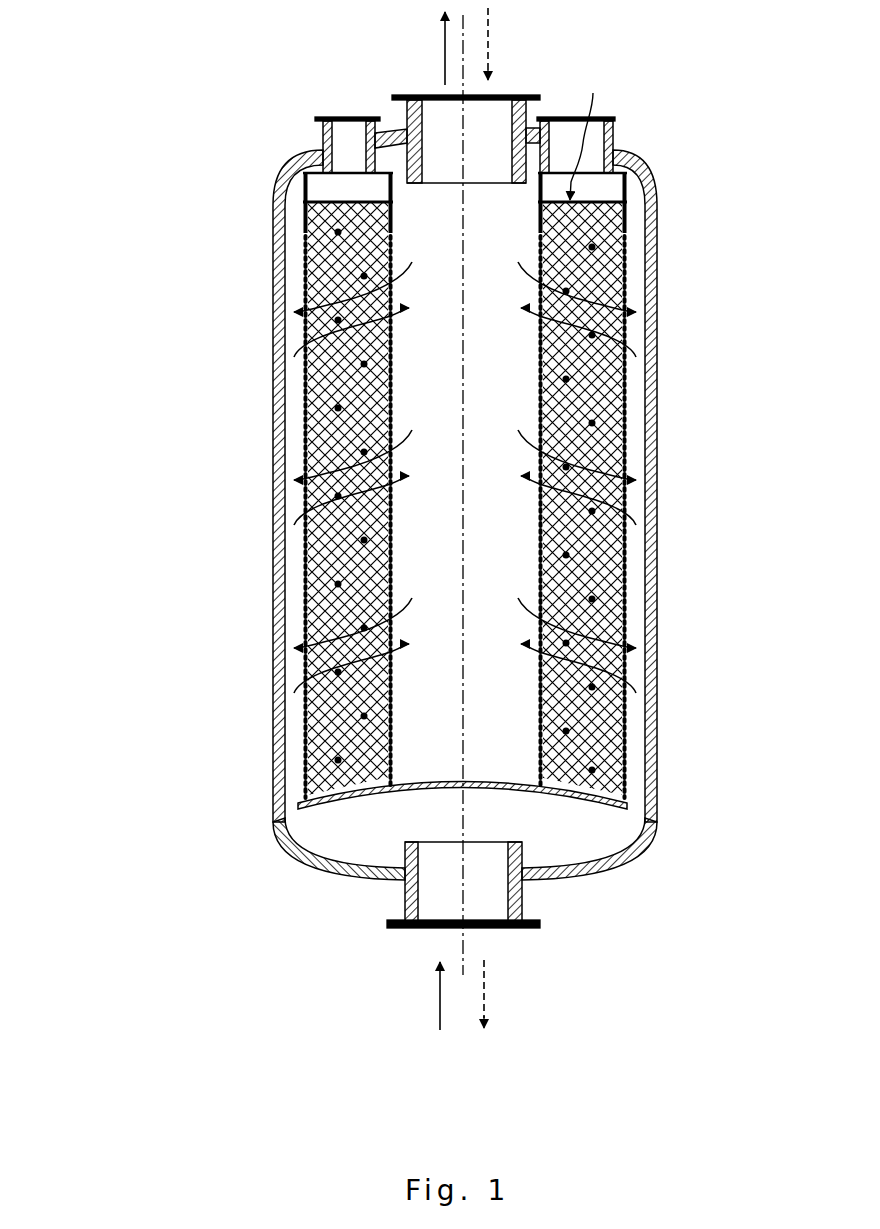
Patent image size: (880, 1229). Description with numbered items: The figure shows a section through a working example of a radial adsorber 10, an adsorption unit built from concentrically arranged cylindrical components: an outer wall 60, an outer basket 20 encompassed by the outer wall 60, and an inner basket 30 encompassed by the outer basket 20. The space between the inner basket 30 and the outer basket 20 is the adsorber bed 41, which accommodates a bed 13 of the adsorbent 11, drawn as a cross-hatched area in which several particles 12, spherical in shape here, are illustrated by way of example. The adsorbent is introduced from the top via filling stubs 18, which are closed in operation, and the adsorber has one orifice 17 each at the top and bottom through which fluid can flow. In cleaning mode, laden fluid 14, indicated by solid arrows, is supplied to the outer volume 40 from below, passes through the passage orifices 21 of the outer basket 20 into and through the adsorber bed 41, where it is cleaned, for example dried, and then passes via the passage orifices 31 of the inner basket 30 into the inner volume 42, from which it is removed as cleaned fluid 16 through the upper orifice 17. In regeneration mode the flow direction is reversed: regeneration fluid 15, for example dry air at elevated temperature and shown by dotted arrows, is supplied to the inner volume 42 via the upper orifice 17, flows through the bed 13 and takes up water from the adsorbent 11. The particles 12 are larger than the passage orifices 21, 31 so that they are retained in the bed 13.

The radial adsorber 10 is at (125, 97).
The adsorbent 11 is at (628, 542).
The particles 12 is at (600, 576).
The bed 13 is at (596, 129).
The laden fluid 14 is at (440, 982).
The regeneration fluid 15 is at (488, 38).
The cleaned fluid 16 is at (443, 52).
The orifice 17 is at (401, 108).
The filling stubs 18 is at (322, 133).
The outer basket 20 is at (625, 163).
The passage orifices 21 is at (645, 392).
The inner basket 30 is at (537, 128).
The passage orifices 31 is at (604, 444).
The outer volume 40 is at (598, 835).
The adsorber bed 41 is at (626, 688).
The inner volume 42 is at (626, 803).
The outer wall 60 is at (658, 200).